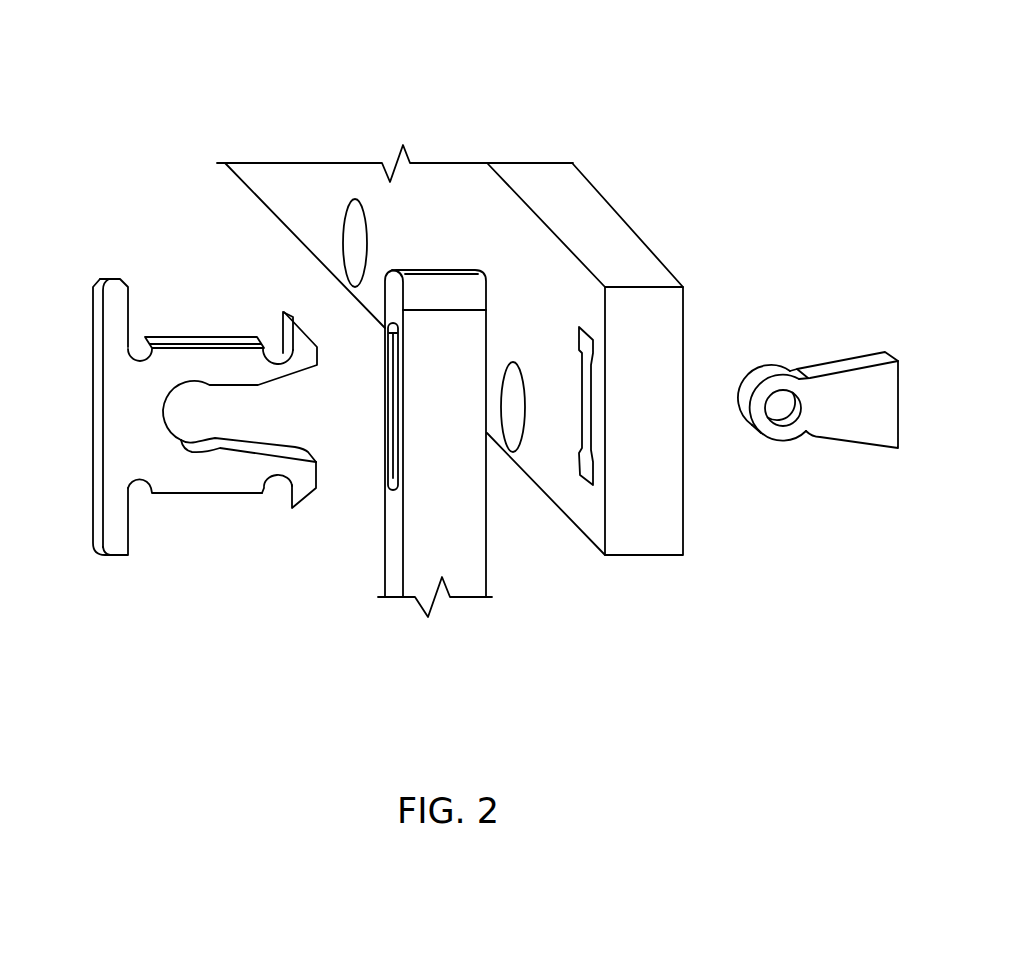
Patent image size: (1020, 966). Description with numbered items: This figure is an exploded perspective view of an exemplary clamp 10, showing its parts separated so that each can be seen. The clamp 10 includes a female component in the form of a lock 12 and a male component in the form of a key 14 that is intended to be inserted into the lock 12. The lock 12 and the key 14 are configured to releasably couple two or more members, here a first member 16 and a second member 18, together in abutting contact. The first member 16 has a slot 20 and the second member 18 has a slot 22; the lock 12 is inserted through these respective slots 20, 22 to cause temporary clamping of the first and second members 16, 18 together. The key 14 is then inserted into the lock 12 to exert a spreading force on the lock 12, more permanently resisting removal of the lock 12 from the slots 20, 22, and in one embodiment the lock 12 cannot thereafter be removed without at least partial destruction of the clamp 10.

The clamp 10 is at (140, 124).
The lock 12 is at (207, 337).
The key 14 is at (820, 438).
The first member 16 is at (415, 600).
The second member 18 is at (645, 557).
The slot 20 is at (386, 490).
The slot 22 is at (583, 473).